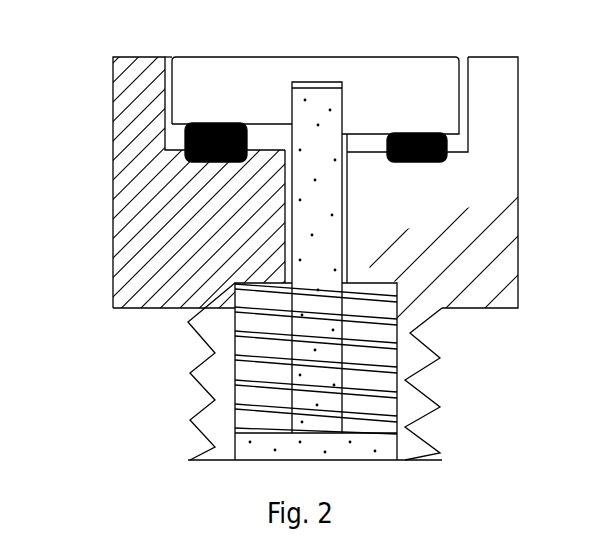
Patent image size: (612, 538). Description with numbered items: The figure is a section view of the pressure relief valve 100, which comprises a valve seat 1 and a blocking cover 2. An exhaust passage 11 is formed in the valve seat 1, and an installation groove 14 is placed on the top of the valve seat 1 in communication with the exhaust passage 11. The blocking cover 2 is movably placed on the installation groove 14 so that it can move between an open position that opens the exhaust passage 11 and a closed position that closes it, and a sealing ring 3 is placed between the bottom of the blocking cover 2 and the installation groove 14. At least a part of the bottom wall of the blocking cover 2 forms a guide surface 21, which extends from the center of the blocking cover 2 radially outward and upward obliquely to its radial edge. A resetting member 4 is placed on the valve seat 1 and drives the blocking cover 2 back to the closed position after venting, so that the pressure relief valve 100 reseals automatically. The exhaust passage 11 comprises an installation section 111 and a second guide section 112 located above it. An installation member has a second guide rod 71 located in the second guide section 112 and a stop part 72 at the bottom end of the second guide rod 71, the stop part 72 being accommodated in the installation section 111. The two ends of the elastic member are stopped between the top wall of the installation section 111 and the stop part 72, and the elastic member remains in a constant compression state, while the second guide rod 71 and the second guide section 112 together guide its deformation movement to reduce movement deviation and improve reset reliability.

The pressure relief valve 100 is at (292, 37).
The valve seat 1 is at (150, 170).
The blocking cover 2 is at (440, 82).
The guide surface 21 is at (262, 128).
The installation groove 14 is at (172, 133).
The sealing ring 3 is at (447, 160).
The second guide section 112 is at (290, 265).
The exhaust passage 11 is at (372, 310).
The second guide rod 71 is at (330, 335).
The resetting member 4 is at (343, 396).
The installation section 111 is at (236, 390).
The stop part 72 is at (237, 442).